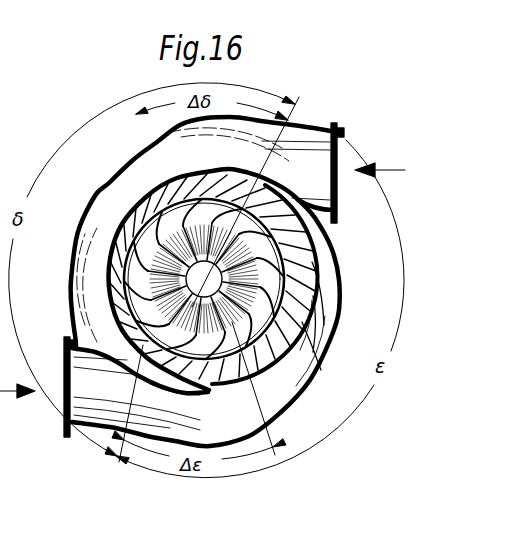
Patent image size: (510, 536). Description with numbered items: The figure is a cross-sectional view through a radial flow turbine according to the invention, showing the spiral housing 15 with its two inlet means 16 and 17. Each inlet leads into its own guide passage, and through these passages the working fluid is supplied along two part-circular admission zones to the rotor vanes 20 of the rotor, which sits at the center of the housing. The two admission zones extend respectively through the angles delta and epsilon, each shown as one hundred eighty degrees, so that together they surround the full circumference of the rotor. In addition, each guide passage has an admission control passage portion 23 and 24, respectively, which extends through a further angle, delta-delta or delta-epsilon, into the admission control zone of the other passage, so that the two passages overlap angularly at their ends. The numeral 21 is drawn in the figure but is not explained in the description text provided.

The spiral housing 15 is at (303, 391).
The inlet means 16 is at (340, 137).
The inlet means 17 is at (208, 156).
The rotor vanes 20 is at (318, 273).
The guide vane extensions 21 is at (313, 352).
The admission control passage portion 23 is at (236, 170).
The admission control passage portion 24 is at (190, 398).